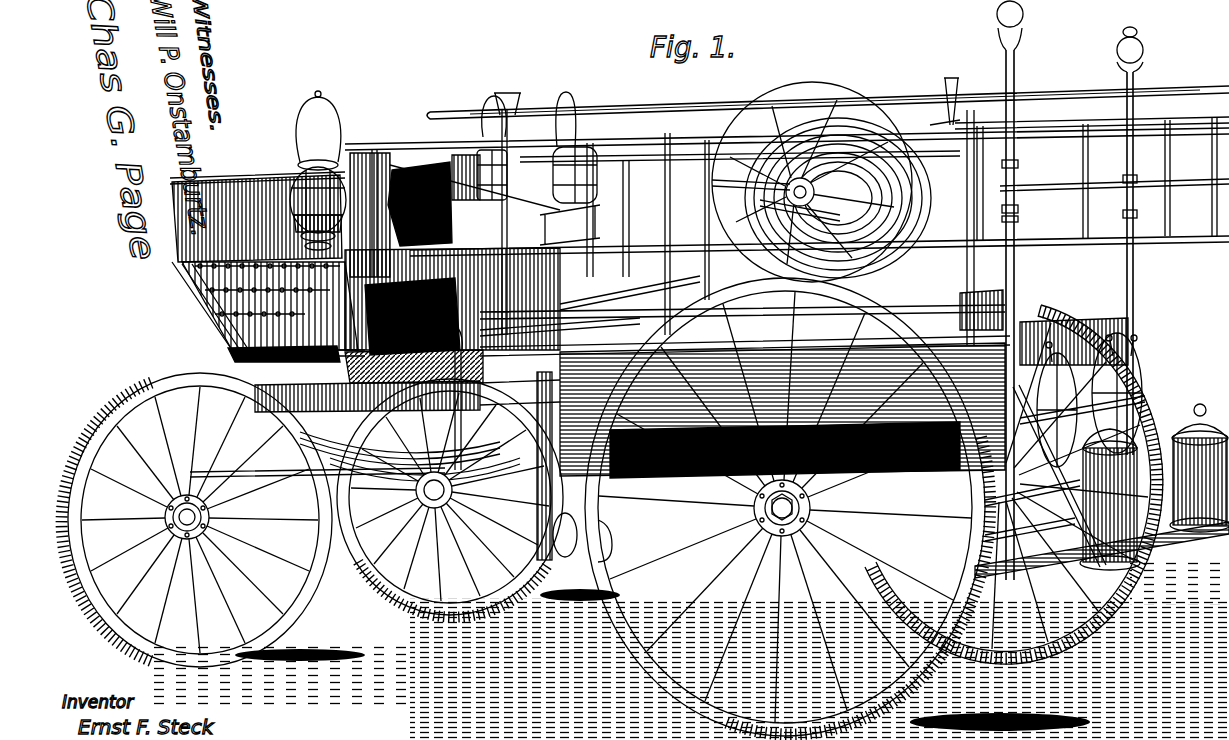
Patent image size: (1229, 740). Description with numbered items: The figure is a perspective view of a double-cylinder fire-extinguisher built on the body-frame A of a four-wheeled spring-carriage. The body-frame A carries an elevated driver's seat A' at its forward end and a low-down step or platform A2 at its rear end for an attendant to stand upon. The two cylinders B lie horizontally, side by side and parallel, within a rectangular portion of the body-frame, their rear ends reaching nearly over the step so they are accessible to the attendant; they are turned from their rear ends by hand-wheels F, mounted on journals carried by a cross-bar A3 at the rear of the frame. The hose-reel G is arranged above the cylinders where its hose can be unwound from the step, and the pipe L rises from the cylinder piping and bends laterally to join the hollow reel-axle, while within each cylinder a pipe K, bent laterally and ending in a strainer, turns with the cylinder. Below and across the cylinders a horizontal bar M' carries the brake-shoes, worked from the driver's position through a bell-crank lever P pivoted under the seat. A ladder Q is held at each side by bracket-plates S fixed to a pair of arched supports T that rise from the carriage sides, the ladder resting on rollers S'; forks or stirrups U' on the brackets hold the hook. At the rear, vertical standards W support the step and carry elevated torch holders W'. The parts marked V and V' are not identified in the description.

The body-frame A is at (696, 366).
The driver's seat A' is at (787, 237).
The low-down step or platform A2 is at (560, 337).
The cross-bar A3 is at (1032, 497).
The cylinders B is at (804, 384).
The hand-wheels F is at (1158, 350).
The hose-reel G is at (821, 174).
The pipe K is at (596, 540).
The pipe L is at (618, 293).
The horizontal rod or bar M' is at (787, 507).
The bell-crank lever P is at (414, 374).
The ladder Q is at (1092, 169).
The metal straps or bracket-plates S is at (481, 148).
The rollers S' is at (931, 117).
The supports T is at (966, 265).
The forks or stirrups U' is at (954, 94).
The top rail V is at (828, 102).
The hanger V' is at (513, 98).
The vertical standards W is at (1083, 315).
The holders for torches W' is at (1083, 36).